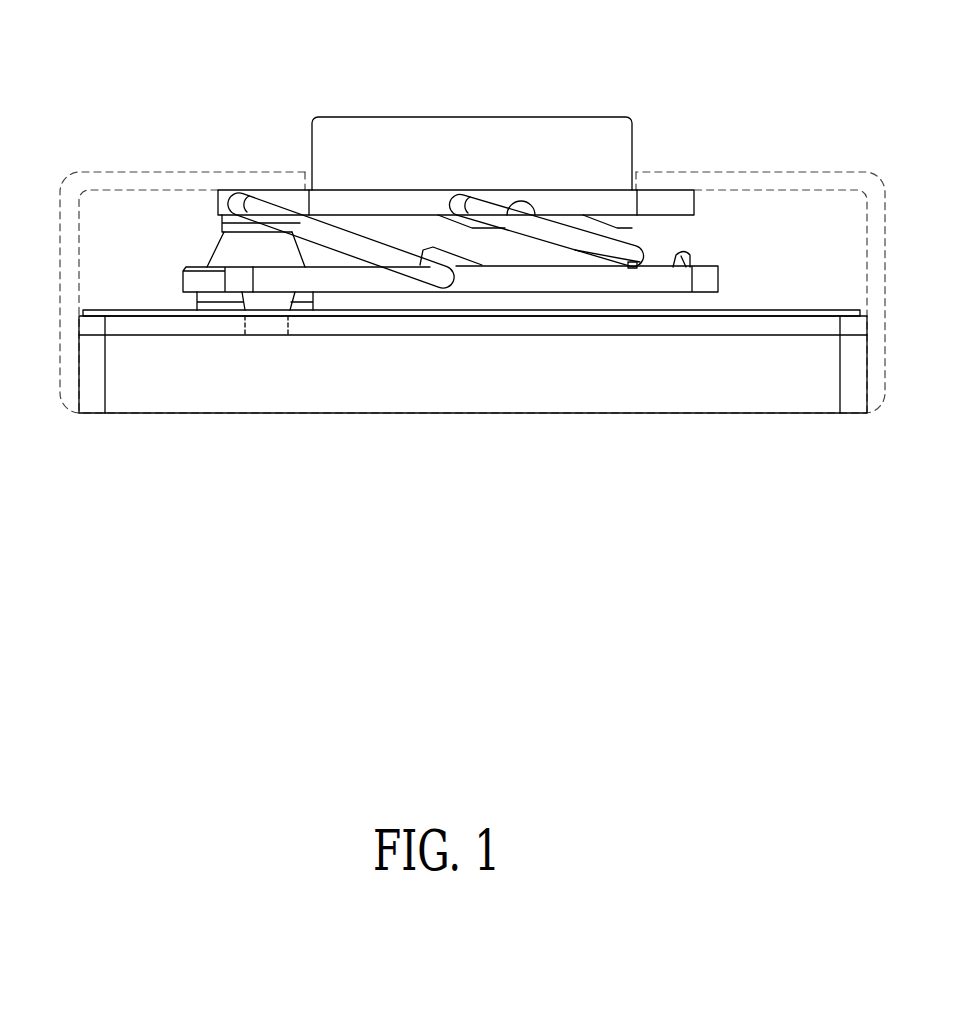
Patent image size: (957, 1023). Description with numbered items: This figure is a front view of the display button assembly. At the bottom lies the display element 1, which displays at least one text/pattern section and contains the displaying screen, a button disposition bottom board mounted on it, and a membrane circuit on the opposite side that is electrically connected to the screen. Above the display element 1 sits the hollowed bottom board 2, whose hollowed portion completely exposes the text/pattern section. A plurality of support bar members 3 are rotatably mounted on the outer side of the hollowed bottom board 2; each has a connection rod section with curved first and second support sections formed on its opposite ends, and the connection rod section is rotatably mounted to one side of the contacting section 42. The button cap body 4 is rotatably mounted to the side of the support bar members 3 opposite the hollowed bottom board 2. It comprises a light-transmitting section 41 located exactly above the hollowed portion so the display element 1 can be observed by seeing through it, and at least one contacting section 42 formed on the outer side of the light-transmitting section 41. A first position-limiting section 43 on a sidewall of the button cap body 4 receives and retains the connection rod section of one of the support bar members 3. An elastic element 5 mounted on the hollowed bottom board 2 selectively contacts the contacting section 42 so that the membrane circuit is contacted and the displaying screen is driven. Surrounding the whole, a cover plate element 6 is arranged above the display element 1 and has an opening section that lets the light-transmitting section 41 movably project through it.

The display element 1 is at (548, 462).
The hollowed bottom board 2 is at (184, 276).
The support bar members 3 is at (663, 232).
The button cap body 4 is at (511, 122).
The light-transmitting section 41 is at (588, 117).
The contacting section 42 is at (478, 160).
The first position-limiting section 43 is at (263, 190).
The elastic element 5 is at (205, 256).
The cover plate element 6 is at (95, 172).